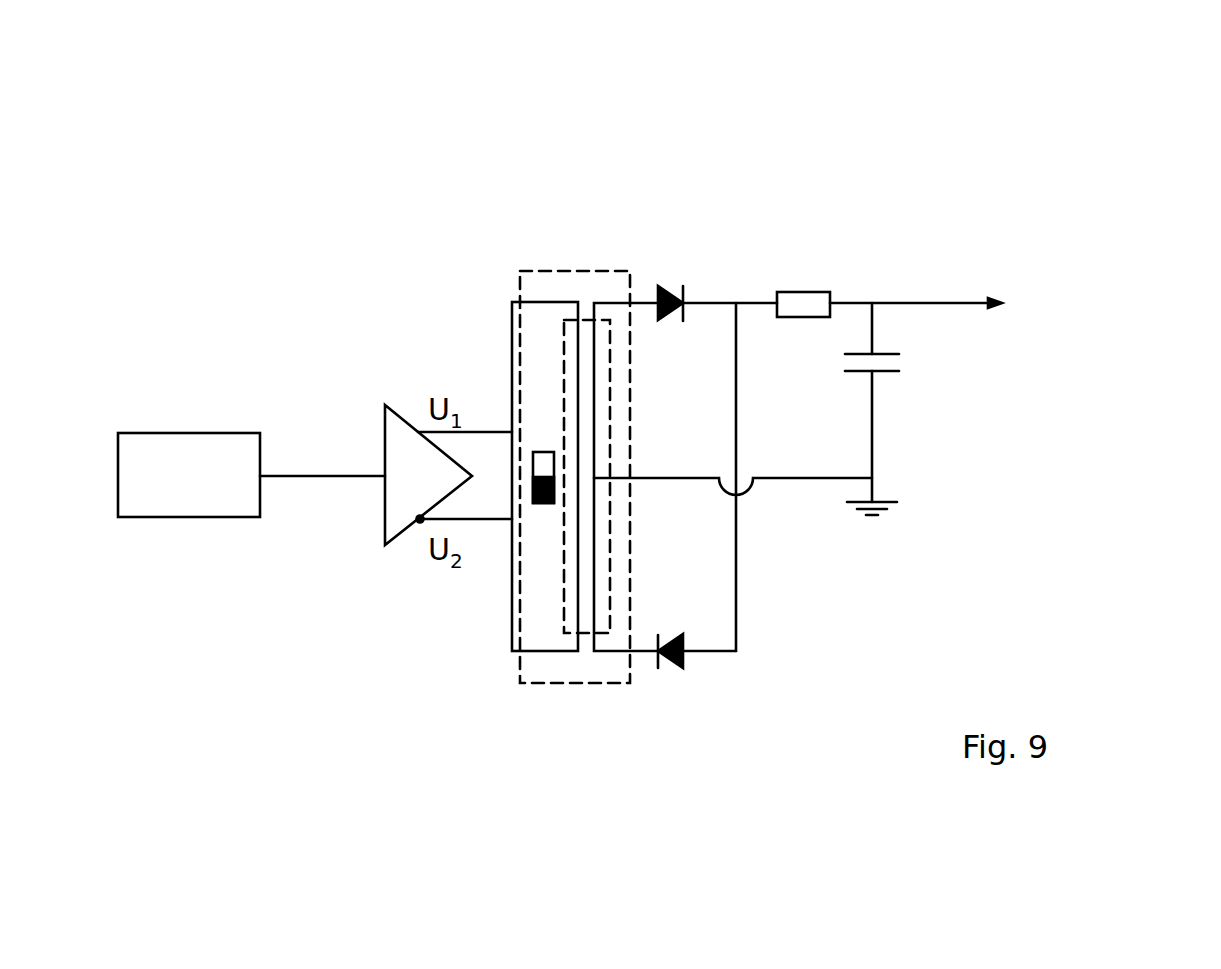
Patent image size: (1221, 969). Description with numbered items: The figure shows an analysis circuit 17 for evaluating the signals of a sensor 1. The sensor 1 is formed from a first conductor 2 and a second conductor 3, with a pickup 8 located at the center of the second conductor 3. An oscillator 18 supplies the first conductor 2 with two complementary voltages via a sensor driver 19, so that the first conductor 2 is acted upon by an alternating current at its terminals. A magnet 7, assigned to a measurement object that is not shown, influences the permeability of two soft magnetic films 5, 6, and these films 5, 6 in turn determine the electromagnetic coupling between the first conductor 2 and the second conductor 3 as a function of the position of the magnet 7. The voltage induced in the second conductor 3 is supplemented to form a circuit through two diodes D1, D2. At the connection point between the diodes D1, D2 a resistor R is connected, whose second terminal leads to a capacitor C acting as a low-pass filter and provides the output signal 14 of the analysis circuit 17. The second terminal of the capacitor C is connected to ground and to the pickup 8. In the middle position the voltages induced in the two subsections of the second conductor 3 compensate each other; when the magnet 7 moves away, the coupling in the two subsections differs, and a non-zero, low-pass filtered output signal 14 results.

The sensor 1 is at (488, 477).
The first conductor 2 is at (572, 363).
The second conductor 3 is at (598, 345).
The soft magnetic film 5 is at (563, 630).
The soft magnetic film 6 is at (587, 476).
The magnet 7 is at (540, 440).
The pickup 8 is at (665, 482).
The output signal 14 is at (947, 306).
The analysis circuit 17 is at (1220, 163).
The oscillator 18 is at (198, 447).
The sensor driver 19 is at (397, 445).
The diode D1 is at (670, 277).
The diode D2 is at (677, 673).
The resistor R is at (820, 292).
The capacitor C is at (893, 380).